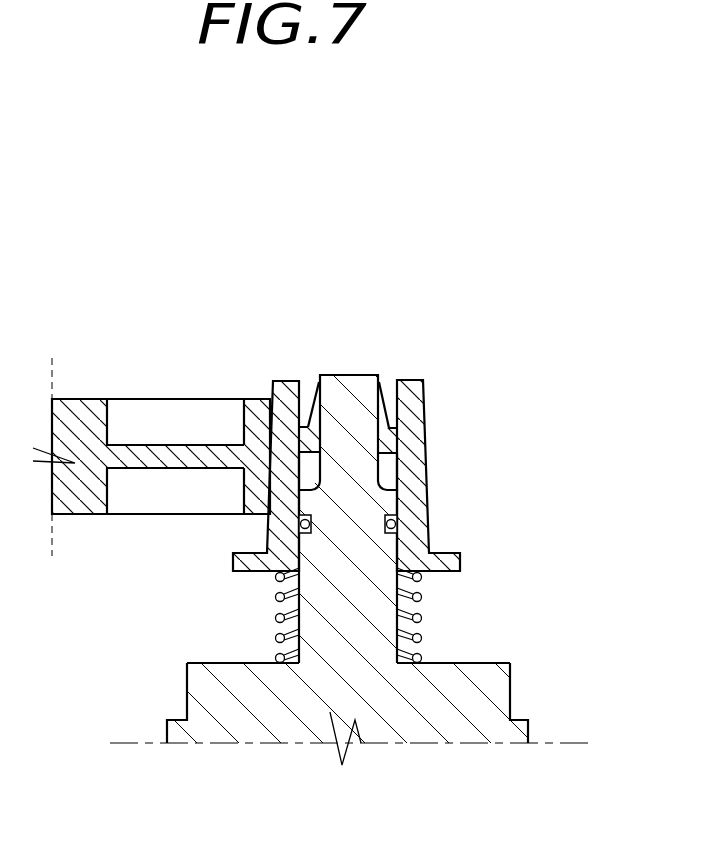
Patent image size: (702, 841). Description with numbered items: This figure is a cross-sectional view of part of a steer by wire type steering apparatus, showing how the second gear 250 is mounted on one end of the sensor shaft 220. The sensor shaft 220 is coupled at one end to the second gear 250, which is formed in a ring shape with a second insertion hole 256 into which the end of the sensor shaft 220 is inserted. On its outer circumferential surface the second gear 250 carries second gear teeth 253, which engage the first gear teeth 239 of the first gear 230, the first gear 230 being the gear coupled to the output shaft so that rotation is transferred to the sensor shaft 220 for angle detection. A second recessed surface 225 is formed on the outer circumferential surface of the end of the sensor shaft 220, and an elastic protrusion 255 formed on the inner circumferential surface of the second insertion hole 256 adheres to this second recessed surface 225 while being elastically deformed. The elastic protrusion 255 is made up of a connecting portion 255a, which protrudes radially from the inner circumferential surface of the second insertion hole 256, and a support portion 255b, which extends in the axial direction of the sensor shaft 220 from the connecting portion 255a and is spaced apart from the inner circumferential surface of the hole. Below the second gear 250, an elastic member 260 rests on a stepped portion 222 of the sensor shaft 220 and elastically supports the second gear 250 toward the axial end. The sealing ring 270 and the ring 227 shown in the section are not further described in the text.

The sensor shaft 220 is at (277, 707).
The stepped portion 222 is at (208, 663).
The second recessed surface 225 is at (372, 478).
The O-ring 227 is at (382, 545).
The first gear 230 is at (82, 412).
The first gear teeth 239 is at (258, 412).
The second gear 250 is at (331, 466).
The second gear teeth 253 is at (283, 390).
The elastic protrusion 255 is at (415, 420).
The connecting portion 255a is at (425, 433).
The support portion 255b is at (392, 425).
The second insertion hole 256 is at (310, 470).
The elastic member 260 is at (423, 617).
The O-ring 270 is at (297, 522).